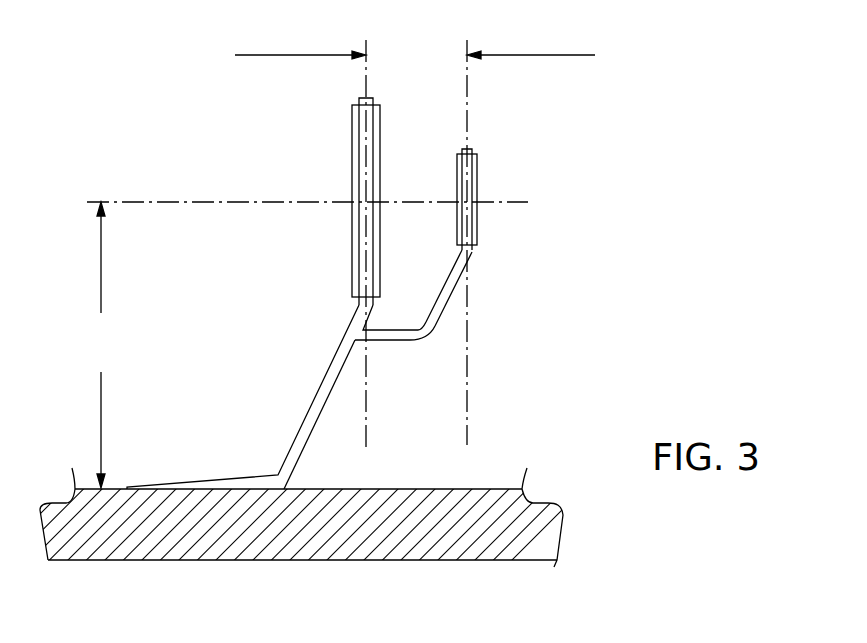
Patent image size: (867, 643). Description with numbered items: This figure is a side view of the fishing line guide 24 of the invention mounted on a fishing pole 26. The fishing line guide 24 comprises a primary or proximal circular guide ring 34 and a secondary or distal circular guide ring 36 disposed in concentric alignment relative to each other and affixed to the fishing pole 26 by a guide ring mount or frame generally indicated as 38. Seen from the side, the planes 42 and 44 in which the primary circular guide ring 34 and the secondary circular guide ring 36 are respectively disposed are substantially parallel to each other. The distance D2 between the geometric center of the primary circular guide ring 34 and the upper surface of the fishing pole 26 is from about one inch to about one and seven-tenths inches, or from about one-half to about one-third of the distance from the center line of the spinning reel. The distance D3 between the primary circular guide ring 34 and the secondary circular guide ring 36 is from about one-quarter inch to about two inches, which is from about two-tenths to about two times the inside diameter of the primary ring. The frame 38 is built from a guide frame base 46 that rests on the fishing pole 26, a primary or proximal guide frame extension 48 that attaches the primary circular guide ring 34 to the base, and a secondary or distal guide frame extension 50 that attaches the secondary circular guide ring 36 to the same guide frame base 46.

The fishing line guide 24 is at (344, 192).
The fishing pole 26 is at (493, 488).
The primary or proximal circular guide ring 34 is at (352, 130).
The secondary or distal circular guide ring 36 is at (475, 160).
The guide ring mount or frame 38 is at (299, 368).
The plane of the primary or proximal circular guide ring 42 is at (365, 420).
The plane of the secondary or distal circular guide ring 44 is at (468, 433).
The guide frame base 46 is at (305, 413).
The primary or proximal guide frame extension 48 is at (367, 316).
The secondary or distal guide frame extension 50 is at (390, 342).
The distance between the center of the primary guide ring and the upper surface of t D2 is at (101, 345).
The distance between the primary and secondary guide rings D3 is at (415, 53).